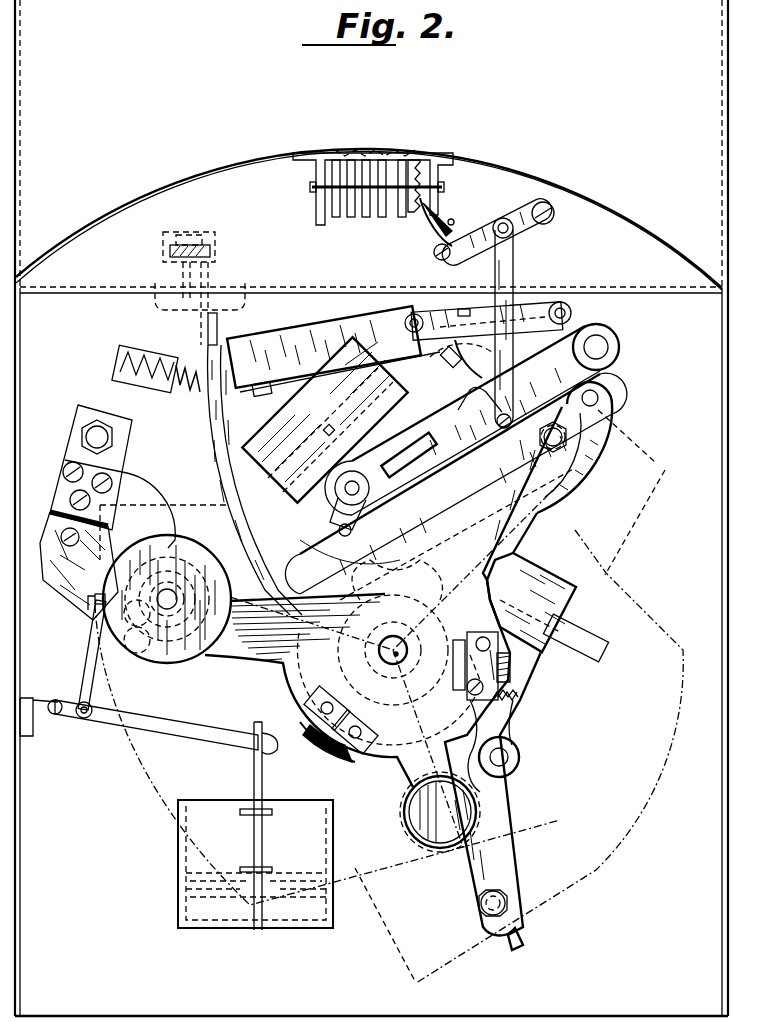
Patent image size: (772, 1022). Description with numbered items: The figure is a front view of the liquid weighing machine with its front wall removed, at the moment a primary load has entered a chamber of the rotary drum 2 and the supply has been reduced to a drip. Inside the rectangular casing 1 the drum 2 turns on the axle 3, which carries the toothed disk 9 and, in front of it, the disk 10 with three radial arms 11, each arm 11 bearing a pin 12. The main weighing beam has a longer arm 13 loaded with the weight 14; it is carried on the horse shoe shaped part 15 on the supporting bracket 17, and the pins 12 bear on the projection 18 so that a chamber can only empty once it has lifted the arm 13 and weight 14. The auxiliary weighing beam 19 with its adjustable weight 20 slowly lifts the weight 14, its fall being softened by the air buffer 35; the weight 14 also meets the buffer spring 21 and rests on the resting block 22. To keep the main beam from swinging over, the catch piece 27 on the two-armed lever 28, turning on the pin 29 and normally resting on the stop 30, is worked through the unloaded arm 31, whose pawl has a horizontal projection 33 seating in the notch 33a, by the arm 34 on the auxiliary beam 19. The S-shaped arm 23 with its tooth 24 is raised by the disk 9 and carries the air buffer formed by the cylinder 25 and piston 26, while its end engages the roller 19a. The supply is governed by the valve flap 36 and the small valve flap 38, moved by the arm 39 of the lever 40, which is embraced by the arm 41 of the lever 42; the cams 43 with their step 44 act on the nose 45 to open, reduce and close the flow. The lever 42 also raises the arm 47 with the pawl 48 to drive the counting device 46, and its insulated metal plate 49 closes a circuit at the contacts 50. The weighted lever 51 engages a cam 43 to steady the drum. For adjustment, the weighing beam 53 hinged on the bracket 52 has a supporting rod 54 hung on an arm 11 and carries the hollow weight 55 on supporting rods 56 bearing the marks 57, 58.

The casing 1 is at (21, 657).
The rotary drum 2 is at (133, 806).
The axle 3 is at (408, 660).
The toothed disk 9 is at (309, 690).
The disk 10 is at (395, 756).
The arms 11 is at (224, 656).
The pin 12 is at (602, 410).
The longer arm of main weighing beam 13 is at (290, 505).
The weight 14 is at (392, 404).
The horse shoe shaped part 15 is at (79, 573).
The supporting bracket 17 is at (130, 487).
The projection 18 is at (156, 656).
The auxiliary weighing beam 19 is at (585, 636).
The roller 19a is at (457, 534).
The adjustable weight 20 is at (546, 562).
The buffer spring 21 is at (156, 388).
The resting block 22 is at (410, 450).
The arm 23 is at (275, 652).
The tooth 24 is at (386, 652).
The cylinder 25 is at (346, 552).
The piston 26 is at (340, 522).
The catch piece 27 is at (392, 332).
The two-armed lever 28 is at (300, 336).
The pin 29 is at (414, 314).
The stop 30 is at (264, 400).
The unloaded arm 31 is at (550, 304).
The horizontal projection 33 is at (462, 308).
The notch 33a is at (480, 321).
The arm 34 is at (588, 456).
The air buffer 35 is at (512, 658).
The valve flap 36 is at (217, 240).
The small valve flap 38 is at (217, 258).
The arm 39 is at (160, 300).
The lever 40 is at (218, 338).
The arm 41 is at (212, 438).
The lever 42 is at (472, 470).
The cams 43 is at (312, 738).
The step 44 is at (308, 716).
The nose 45 is at (382, 508).
The counting device 46 is at (372, 168).
The arm 47 is at (514, 268).
The pawl 48 is at (472, 230).
The insulated metal plate 49 is at (472, 419).
The contacts 50 is at (466, 374).
The weighted lever 51 is at (506, 728).
The bracket 52 is at (33, 738).
The weighing beam 53 is at (178, 736).
The supporting rod 54 is at (90, 678).
The hollow weight 55 is at (207, 921).
The supporting rods 56 is at (265, 786).
The mark 57 is at (275, 872).
The mark 58 is at (272, 814).